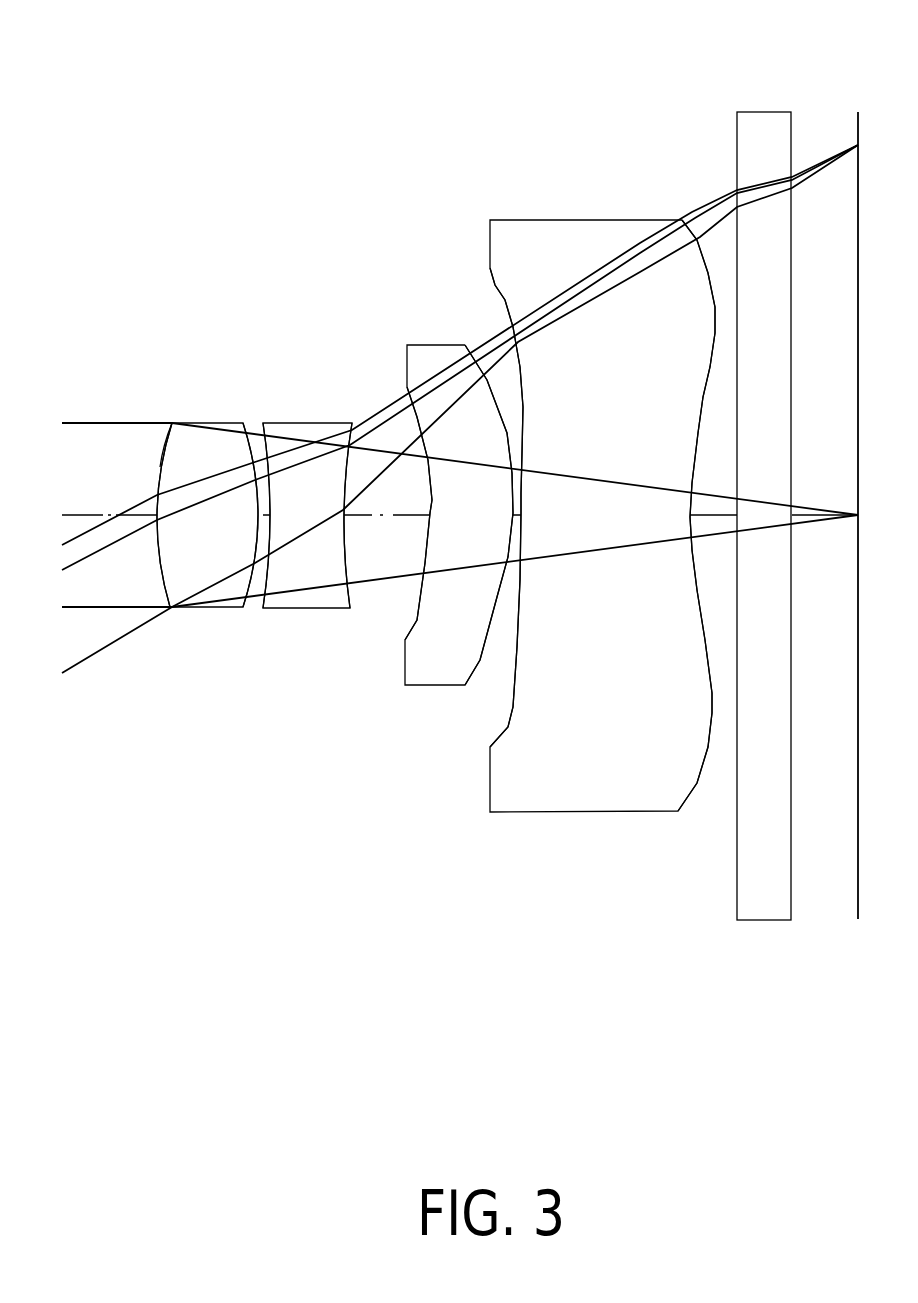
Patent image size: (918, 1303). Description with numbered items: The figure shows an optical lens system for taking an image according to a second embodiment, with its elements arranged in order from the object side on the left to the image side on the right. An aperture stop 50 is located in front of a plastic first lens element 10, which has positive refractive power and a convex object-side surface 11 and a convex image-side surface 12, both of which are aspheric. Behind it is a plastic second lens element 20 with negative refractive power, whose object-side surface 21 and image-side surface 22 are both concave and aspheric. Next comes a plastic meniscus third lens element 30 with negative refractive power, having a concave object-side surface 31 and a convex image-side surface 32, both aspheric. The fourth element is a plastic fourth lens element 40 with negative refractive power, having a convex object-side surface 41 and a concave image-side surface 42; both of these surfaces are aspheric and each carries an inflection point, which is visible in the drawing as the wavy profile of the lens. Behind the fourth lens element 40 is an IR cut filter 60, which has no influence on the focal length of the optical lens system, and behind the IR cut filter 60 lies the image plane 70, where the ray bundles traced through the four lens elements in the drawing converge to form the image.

The first lens element 10 is at (220, 425).
The object-side surface of first lens element 11 is at (157, 577).
The image-side surface of first lens element 12 is at (245, 583).
The second lens element 20 is at (298, 427).
The object-side surface of second lens element 21 is at (268, 577).
The image-side surface of second lens element 22 is at (342, 567).
The third lens element 30 is at (425, 352).
The object-side surface of third lens element 31 is at (415, 627).
The image-side surface of third lens element 32 is at (478, 662).
The fourth lens element 40 is at (530, 238).
The object-side surface of fourth lens element 41 is at (513, 713).
The image-side surface of fourth lens element 42 is at (695, 792).
The aperture stop 50 is at (165, 440).
The IR cut filter 60 is at (770, 136).
The image plane 70 is at (857, 133).